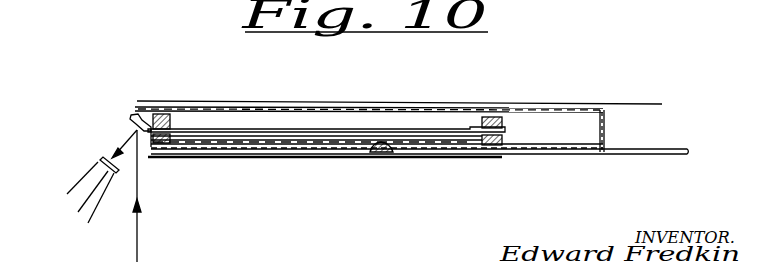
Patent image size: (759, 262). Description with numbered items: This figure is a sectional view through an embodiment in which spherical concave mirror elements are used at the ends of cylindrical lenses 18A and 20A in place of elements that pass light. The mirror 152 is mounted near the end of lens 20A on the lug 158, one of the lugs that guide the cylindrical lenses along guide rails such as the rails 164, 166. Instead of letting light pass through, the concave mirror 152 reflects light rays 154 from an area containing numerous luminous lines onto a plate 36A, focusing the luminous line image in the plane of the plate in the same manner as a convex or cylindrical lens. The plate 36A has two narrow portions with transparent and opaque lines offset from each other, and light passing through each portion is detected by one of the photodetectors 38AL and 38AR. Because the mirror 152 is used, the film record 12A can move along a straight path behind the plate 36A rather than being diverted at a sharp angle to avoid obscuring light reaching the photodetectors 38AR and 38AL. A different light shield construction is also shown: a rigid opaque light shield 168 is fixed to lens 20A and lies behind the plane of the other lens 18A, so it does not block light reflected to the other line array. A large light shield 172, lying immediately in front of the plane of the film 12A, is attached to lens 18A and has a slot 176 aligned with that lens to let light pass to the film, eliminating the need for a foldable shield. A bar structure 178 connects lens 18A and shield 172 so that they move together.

The film record 12A is at (613, 106).
The cylindrical lens 18A is at (381, 153).
The cylindrical lens 20A is at (242, 132).
The plate 36A is at (103, 160).
The photodetector 38AR is at (75, 192).
The photodetector 38AL is at (97, 214).
The spherical concave mirror element 152 is at (130, 122).
The light rays 154 is at (138, 245).
The lug 158 is at (182, 130).
The guide rail 164 is at (168, 113).
The guide rail 166 is at (493, 118).
The rigid opaque light shield 168 is at (220, 139).
The light shield 172 is at (452, 117).
The slot 176 is at (380, 115).
The bar structure 178 is at (678, 148).